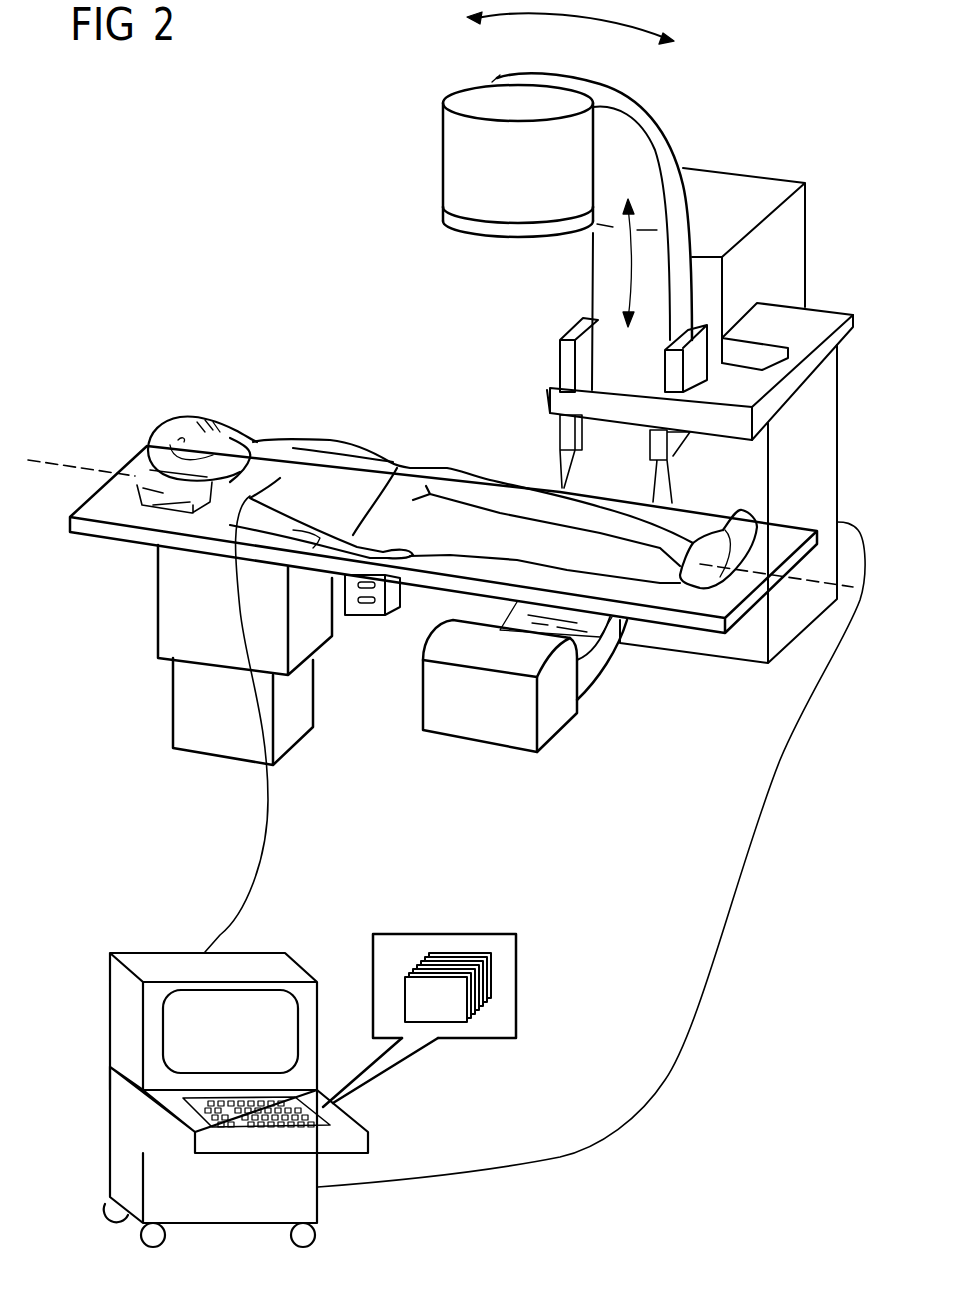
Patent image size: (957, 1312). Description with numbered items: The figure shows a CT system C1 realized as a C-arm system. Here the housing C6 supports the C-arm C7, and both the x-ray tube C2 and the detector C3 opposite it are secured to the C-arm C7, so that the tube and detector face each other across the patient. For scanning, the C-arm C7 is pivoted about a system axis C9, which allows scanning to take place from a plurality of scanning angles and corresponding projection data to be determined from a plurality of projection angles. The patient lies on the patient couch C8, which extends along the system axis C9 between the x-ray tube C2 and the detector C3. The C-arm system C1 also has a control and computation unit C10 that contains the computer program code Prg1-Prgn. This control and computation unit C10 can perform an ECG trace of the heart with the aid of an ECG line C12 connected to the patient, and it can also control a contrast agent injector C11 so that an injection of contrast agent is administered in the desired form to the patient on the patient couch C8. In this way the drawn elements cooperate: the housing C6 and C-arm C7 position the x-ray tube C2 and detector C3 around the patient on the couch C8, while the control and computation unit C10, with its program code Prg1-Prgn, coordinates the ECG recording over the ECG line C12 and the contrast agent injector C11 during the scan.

The CT system C1 is at (150, 355).
The x-ray tube C2 is at (457, 183).
The detector C3 is at (552, 706).
The housing C6 is at (808, 203).
The C-arm C7 is at (680, 148).
The patient couch C8 is at (95, 533).
The system axis C9 is at (95, 465).
The control and computation unit C10 is at (367, 1127).
The contrast agent injector C11 is at (365, 617).
The ECG line C12 is at (258, 838).
The computer program code Prg1-Prgn is at (455, 1023).